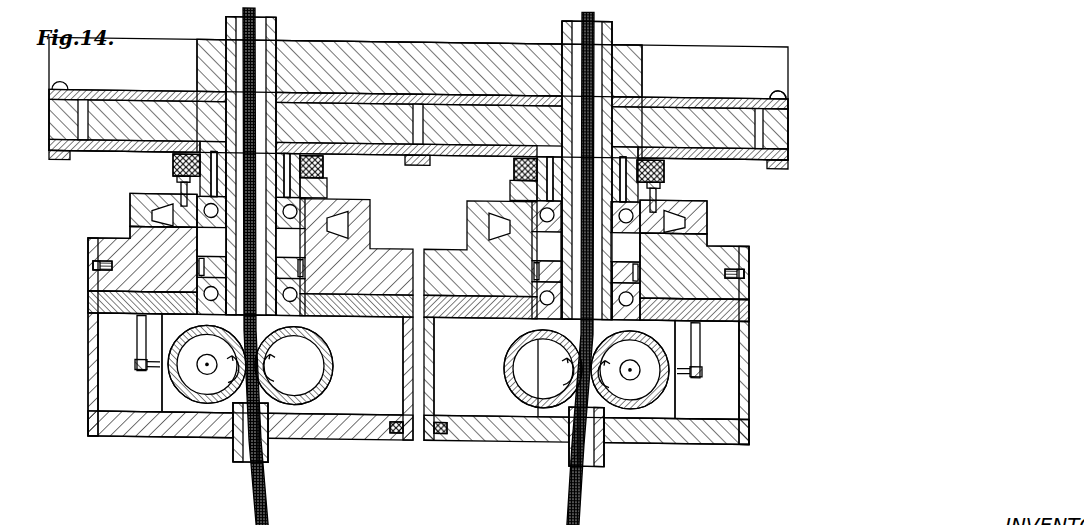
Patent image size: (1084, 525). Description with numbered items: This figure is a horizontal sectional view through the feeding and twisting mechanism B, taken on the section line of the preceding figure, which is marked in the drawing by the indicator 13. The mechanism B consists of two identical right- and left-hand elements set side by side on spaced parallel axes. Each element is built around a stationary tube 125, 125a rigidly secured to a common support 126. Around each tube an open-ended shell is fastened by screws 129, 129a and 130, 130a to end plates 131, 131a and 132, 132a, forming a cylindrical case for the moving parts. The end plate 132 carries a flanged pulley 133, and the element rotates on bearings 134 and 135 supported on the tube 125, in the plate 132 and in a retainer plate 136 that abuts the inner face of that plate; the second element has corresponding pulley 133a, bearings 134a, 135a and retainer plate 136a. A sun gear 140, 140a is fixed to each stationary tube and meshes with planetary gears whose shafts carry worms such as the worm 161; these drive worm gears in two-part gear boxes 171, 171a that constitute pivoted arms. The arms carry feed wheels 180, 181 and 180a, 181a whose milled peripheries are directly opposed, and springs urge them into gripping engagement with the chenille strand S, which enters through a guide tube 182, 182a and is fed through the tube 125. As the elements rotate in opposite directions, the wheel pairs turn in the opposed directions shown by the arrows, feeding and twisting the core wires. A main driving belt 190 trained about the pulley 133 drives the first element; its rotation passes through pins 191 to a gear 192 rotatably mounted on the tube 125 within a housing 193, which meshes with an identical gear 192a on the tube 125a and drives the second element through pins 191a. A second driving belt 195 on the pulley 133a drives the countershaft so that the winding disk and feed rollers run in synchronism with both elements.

The tube 125a is at (229, 26).
The tube 125 is at (615, 31).
The support 126 is at (488, 43).
The gear 192a is at (100, 110).
The gear 192 is at (700, 110).
The housing 193 is at (740, 112).
The pins 191a is at (279, 147).
The pins 191 is at (620, 160).
The worm 161 is at (624, 11).
The mechanism B is at (427, 34).
The flanged pulley 133a is at (142, 196).
The flanged pulley 133 is at (705, 186).
The bearing 134a is at (327, 187).
The bearing 134 is at (527, 195).
The second driving belt 195 is at (133, 213).
The main driving belt 190 is at (720, 218).
The end plate 132a is at (107, 238).
The end plate 132 is at (733, 257).
The screws 129a is at (95, 266).
The screws 129 is at (743, 278).
The retainer plate 136a is at (100, 307).
The retainer plate 136 is at (735, 310).
The bearing 135a is at (200, 298).
The bearing 135 is at (720, 338).
The sun gear 140a is at (250, 364).
The sun gear 140 is at (586, 368).
The feed wheel 181a is at (170, 363).
The feed wheel 181 is at (517, 392).
The feed wheel 180a is at (322, 378).
The feed wheel 180 is at (662, 393).
The guide tube 182a is at (268, 453).
The guide tube 182 is at (568, 457).
The gear box 171a is at (173, 420).
The gear box 171 is at (650, 417).
The end plate 131a is at (113, 428).
The end plate 131 is at (732, 447).
The screws 130a is at (393, 442).
The screws 130 is at (443, 442).
The chenille strand S is at (562, 520).
The section line 13 is at (798, 375).